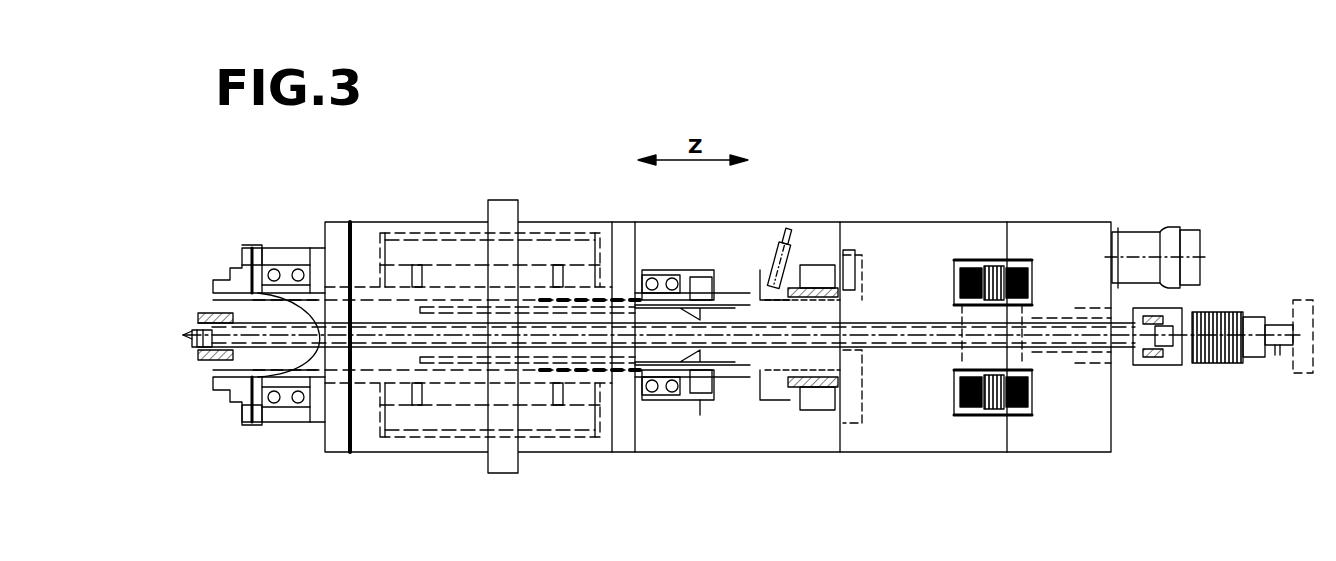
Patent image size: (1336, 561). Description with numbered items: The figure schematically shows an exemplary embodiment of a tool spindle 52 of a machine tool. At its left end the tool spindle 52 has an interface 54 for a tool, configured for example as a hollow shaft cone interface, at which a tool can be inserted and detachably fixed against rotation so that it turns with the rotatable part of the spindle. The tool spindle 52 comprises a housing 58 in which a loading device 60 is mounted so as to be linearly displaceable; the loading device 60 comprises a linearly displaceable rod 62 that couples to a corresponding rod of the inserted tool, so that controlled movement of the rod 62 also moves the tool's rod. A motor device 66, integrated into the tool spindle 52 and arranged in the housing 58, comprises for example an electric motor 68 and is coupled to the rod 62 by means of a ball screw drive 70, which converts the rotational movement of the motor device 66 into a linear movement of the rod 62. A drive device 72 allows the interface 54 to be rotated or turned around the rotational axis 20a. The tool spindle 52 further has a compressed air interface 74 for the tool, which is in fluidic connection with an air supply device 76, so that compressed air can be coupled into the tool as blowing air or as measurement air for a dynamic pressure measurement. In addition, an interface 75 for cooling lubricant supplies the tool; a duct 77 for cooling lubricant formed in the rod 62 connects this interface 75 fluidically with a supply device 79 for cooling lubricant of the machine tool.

The rotational axis 20a is at (184, 332).
The tool spindle 52 is at (964, 181).
The interface 54 is at (262, 300).
The housing 58 is at (715, 453).
The loading device 60 is at (917, 312).
The rod 62 is at (206, 352).
The motor device 66 is at (996, 252).
The electric motor 68 is at (983, 415).
The ball screw drive 70 is at (1015, 358).
The drive device 72 is at (555, 286).
The compressed air interface 74 is at (245, 298).
The interface for cooling lubricant 75 is at (190, 341).
The air supply device 76 is at (783, 236).
The duct 77 is at (1092, 338).
The supply device for cooling lubricant 79 is at (1297, 362).